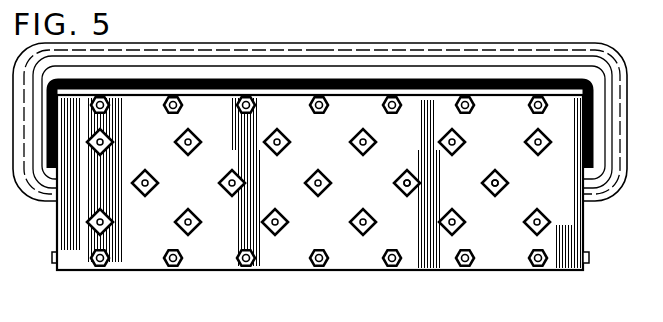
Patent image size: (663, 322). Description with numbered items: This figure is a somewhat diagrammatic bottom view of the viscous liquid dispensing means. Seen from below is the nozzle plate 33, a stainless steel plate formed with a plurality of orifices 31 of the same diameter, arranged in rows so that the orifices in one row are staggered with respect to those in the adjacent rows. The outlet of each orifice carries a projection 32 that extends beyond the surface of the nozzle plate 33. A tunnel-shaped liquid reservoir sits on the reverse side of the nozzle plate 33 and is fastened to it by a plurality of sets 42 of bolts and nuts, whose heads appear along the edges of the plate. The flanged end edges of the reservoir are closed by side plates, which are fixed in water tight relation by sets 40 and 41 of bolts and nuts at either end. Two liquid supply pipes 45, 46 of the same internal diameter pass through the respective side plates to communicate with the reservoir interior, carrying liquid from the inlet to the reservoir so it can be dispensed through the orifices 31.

The orifices 31 is at (398, 177).
The projection 32 is at (413, 194).
The nozzle plate 33 is at (136, 258).
The sets of bolts and nuts 40 is at (588, 264).
The sets of bolts and nuts 41 is at (56, 93).
The sets of bolts and nuts 42 is at (241, 263).
The pipe 45 is at (600, 192).
The pipe 46 is at (36, 197).